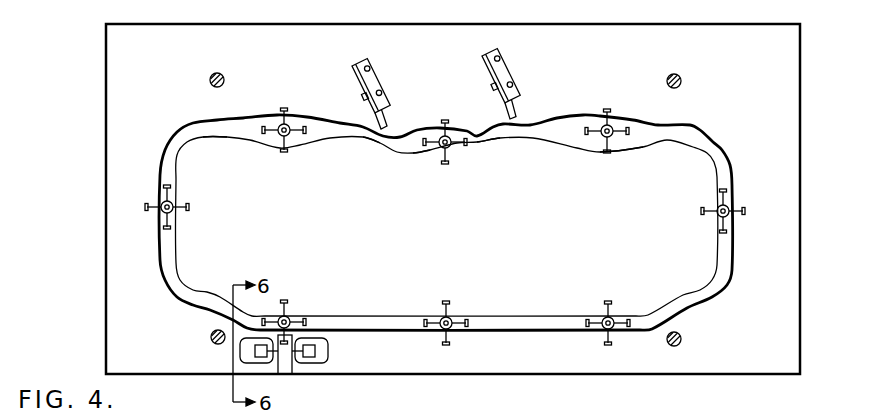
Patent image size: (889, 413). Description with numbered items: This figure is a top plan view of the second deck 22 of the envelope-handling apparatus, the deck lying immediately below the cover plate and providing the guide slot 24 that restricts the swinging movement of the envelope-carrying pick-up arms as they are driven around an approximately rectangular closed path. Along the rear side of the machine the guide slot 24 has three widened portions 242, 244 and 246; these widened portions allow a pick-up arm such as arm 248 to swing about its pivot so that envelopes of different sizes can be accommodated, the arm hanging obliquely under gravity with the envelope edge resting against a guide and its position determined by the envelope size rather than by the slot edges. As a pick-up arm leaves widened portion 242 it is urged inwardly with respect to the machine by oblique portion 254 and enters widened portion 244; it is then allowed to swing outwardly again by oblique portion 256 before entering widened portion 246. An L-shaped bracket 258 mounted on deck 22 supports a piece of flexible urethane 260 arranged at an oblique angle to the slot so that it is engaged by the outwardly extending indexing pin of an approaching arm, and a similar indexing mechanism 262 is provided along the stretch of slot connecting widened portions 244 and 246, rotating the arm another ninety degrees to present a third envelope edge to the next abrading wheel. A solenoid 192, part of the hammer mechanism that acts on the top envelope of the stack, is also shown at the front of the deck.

The second deck 22 is at (812, 175).
The guide slot 24 is at (715, 276).
The solenoid 192 is at (242, 355).
The widened portion 242 is at (252, 135).
The widened portion 244 is at (425, 148).
The widened portion 246 is at (627, 140).
The pick-up arm 248 is at (290, 123).
The oblique portion 254 is at (371, 145).
The oblique portion 256 is at (497, 142).
The L-shaped bracket 258 is at (376, 77).
The urethane 260 is at (387, 118).
The indexing mechanism 262 is at (508, 72).